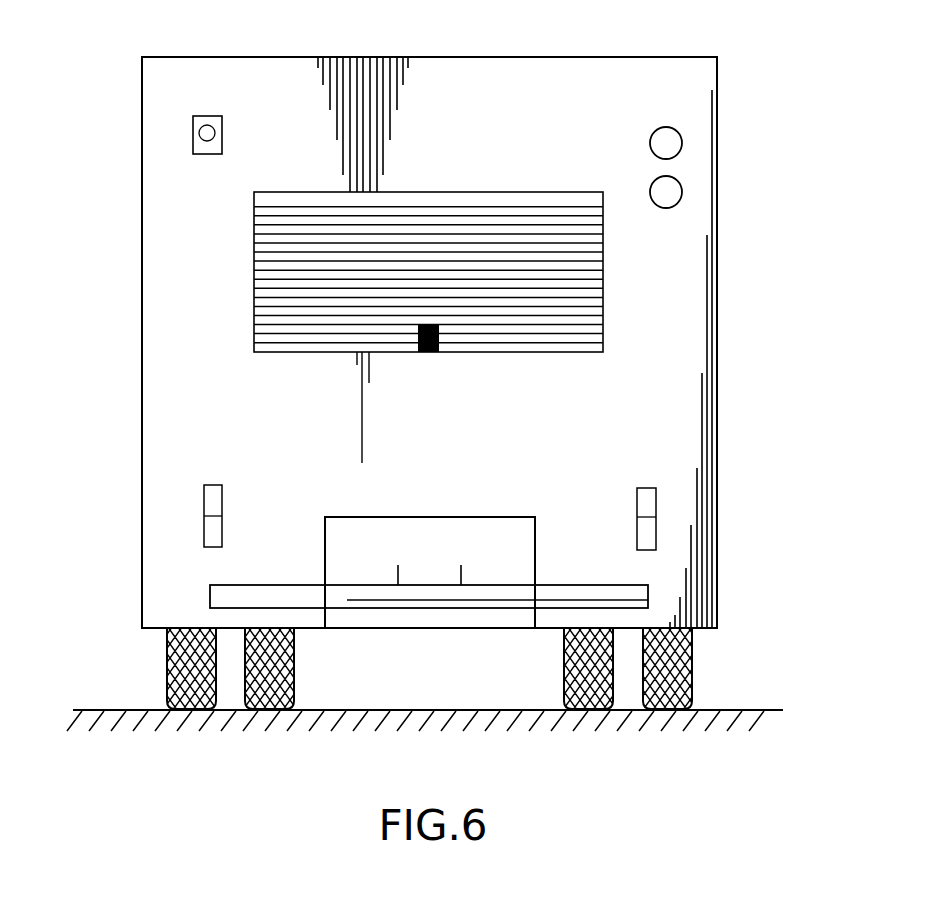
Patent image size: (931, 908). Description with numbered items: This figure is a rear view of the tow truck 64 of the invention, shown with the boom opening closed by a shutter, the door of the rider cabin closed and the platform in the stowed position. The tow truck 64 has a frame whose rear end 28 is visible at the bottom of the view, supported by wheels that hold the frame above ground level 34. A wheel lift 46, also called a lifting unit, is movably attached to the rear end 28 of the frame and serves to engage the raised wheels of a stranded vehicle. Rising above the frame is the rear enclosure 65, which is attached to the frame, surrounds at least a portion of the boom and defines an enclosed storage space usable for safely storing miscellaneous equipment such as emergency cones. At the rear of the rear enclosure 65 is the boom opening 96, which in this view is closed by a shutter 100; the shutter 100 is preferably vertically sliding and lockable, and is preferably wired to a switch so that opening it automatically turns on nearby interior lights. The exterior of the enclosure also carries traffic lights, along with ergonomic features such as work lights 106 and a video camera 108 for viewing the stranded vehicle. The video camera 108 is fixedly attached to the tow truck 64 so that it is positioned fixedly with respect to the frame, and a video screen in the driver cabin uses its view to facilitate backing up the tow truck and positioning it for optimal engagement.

The rear end 28 is at (457, 543).
The ground level 34 is at (764, 700).
The wheel lift 46 is at (283, 598).
The tow truck 64 is at (100, 121).
The rear enclosure 65 is at (272, 80).
The boom opening 96 is at (244, 328).
The shutter 100 is at (457, 213).
The work lights 106 is at (650, 190).
The video camera 108 is at (222, 135).